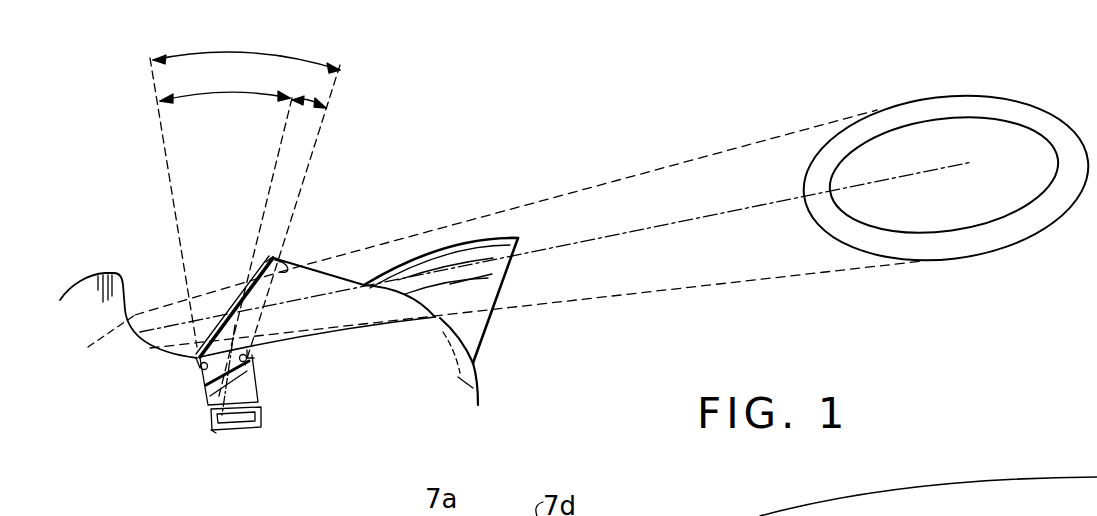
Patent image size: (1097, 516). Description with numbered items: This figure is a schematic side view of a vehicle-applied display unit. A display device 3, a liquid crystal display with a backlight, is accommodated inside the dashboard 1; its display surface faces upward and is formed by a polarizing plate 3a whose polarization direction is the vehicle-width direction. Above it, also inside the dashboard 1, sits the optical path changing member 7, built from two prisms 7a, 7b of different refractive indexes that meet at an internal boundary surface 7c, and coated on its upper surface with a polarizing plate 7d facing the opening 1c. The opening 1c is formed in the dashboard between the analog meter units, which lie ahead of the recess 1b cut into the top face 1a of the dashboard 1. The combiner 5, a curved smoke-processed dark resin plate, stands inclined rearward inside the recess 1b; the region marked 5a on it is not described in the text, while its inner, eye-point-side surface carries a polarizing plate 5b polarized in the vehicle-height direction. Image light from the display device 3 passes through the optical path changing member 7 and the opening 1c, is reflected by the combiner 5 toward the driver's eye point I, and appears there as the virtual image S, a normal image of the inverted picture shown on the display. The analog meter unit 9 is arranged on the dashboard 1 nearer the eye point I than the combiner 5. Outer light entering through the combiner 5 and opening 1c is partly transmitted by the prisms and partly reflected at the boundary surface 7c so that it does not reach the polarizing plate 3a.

The dashboard 1 is at (464, 378).
The top face 1a is at (397, 318).
The semi-circular recess 1b is at (125, 310).
The opening 1c is at (200, 364).
The display device 3 is at (252, 440).
The polarizing plate 3a is at (233, 430).
The combiner 5 is at (247, 272).
The mirror reflecting surface 5a is at (268, 262).
The polarizing plate 5b is at (280, 262).
The optical path changing member 7 is at (270, 377).
The prism 7a is at (197, 403).
The prism 7b is at (262, 396).
The boundary surface 7c is at (218, 432).
The polarizing plate 7d is at (248, 356).
The analog meter unit 9 is at (487, 252).
The eye point I is at (944, 137).
The virtual image S is at (96, 341).